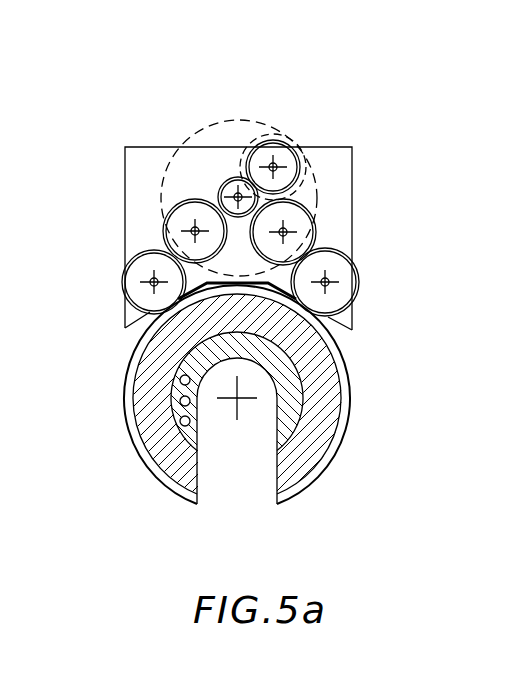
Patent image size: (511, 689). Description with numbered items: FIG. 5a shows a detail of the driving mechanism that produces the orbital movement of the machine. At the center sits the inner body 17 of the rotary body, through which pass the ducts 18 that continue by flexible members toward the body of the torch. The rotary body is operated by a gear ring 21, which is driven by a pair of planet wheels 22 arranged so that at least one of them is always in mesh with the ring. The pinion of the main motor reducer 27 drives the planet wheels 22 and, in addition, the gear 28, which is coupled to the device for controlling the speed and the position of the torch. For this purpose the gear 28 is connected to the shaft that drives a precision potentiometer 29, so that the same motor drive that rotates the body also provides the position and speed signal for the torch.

The inner body 17 is at (293, 397).
The ducts 18 is at (180, 420).
The gear ring 21 is at (137, 363).
The planet wheels 22 is at (142, 263).
The main motor reducer 27 is at (223, 122).
The gear 28 is at (282, 155).
The precision potentiometer 29 is at (278, 135).